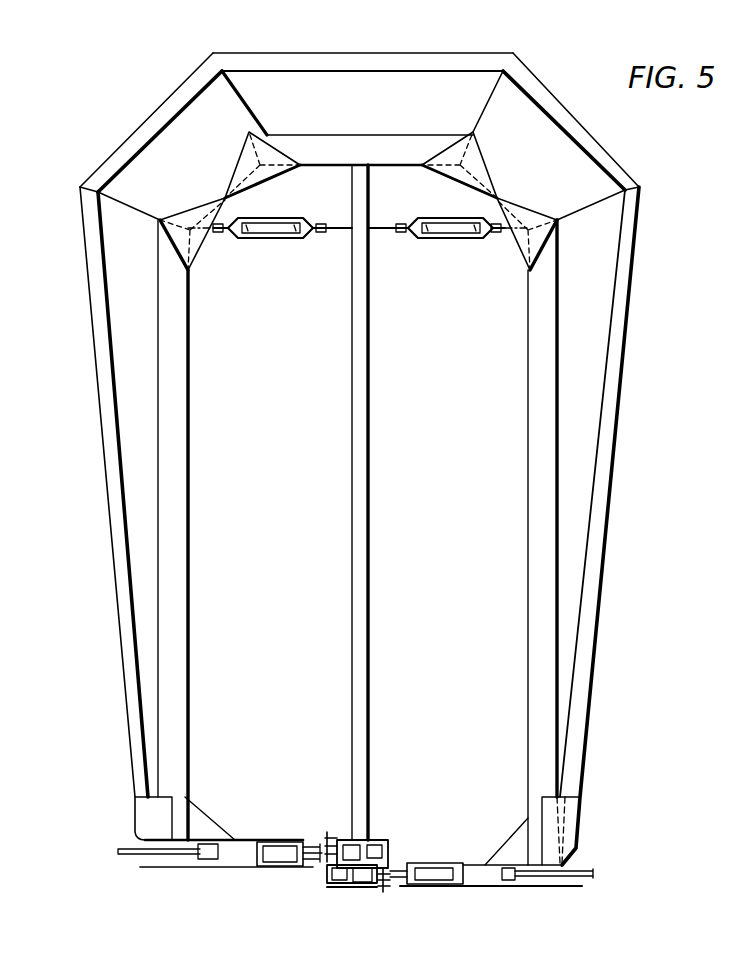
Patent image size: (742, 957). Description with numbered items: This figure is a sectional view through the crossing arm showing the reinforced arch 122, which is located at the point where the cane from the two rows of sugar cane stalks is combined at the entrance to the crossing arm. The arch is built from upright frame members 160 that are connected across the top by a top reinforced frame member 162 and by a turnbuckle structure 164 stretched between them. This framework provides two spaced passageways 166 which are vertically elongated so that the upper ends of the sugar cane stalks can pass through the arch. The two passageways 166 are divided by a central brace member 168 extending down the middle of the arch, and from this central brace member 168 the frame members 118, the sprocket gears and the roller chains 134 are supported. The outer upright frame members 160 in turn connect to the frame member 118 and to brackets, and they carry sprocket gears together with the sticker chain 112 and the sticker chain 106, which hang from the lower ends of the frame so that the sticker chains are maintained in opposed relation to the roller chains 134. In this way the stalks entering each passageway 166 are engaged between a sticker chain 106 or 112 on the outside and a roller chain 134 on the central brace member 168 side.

The sticker chain 106 is at (313, 842).
The sticker chain 112 is at (400, 868).
The frame member 118 is at (330, 863).
The reinforced arch 122 is at (97, 460).
The roller chains 134 is at (333, 840).
The upright frame members 160 is at (172, 578).
The top reinforced frame member 162 is at (385, 145).
The turnbuckle structure 164 is at (408, 237).
The spaced passageways 166 is at (283, 442).
The central brace member 168 is at (355, 583).